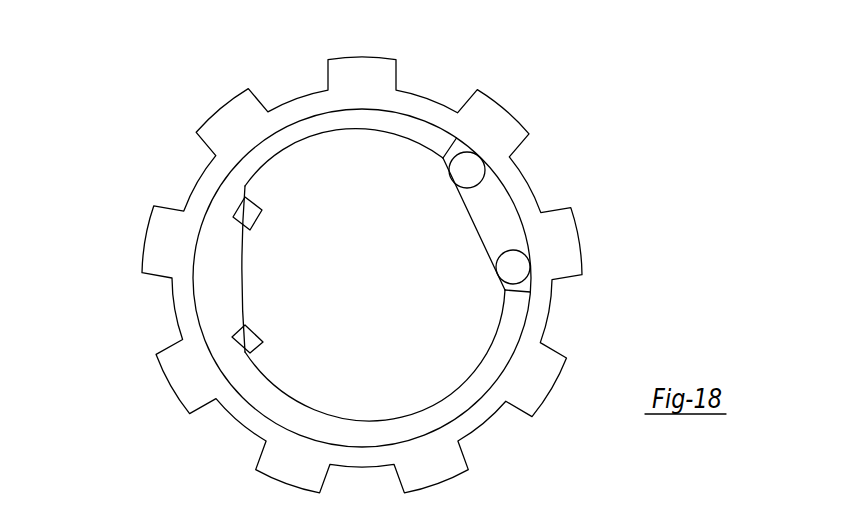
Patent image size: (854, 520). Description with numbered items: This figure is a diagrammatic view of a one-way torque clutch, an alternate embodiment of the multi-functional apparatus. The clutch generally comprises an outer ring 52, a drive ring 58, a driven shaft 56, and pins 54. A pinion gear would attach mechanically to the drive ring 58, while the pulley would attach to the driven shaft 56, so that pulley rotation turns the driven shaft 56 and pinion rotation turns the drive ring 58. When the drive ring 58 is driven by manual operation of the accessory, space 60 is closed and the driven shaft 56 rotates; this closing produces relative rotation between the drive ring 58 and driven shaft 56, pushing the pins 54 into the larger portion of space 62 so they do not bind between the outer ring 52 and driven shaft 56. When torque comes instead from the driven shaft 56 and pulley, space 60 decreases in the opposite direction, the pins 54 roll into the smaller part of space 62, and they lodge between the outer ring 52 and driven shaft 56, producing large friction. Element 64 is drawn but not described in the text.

The outer ring 52 is at (510, 168).
The pins 54 is at (475, 173).
The driven shaft 56 is at (448, 302).
The drive ring 58 is at (237, 273).
The space 60 is at (248, 212).
The space 62 is at (503, 220).
The inner ring 64 is at (467, 392).